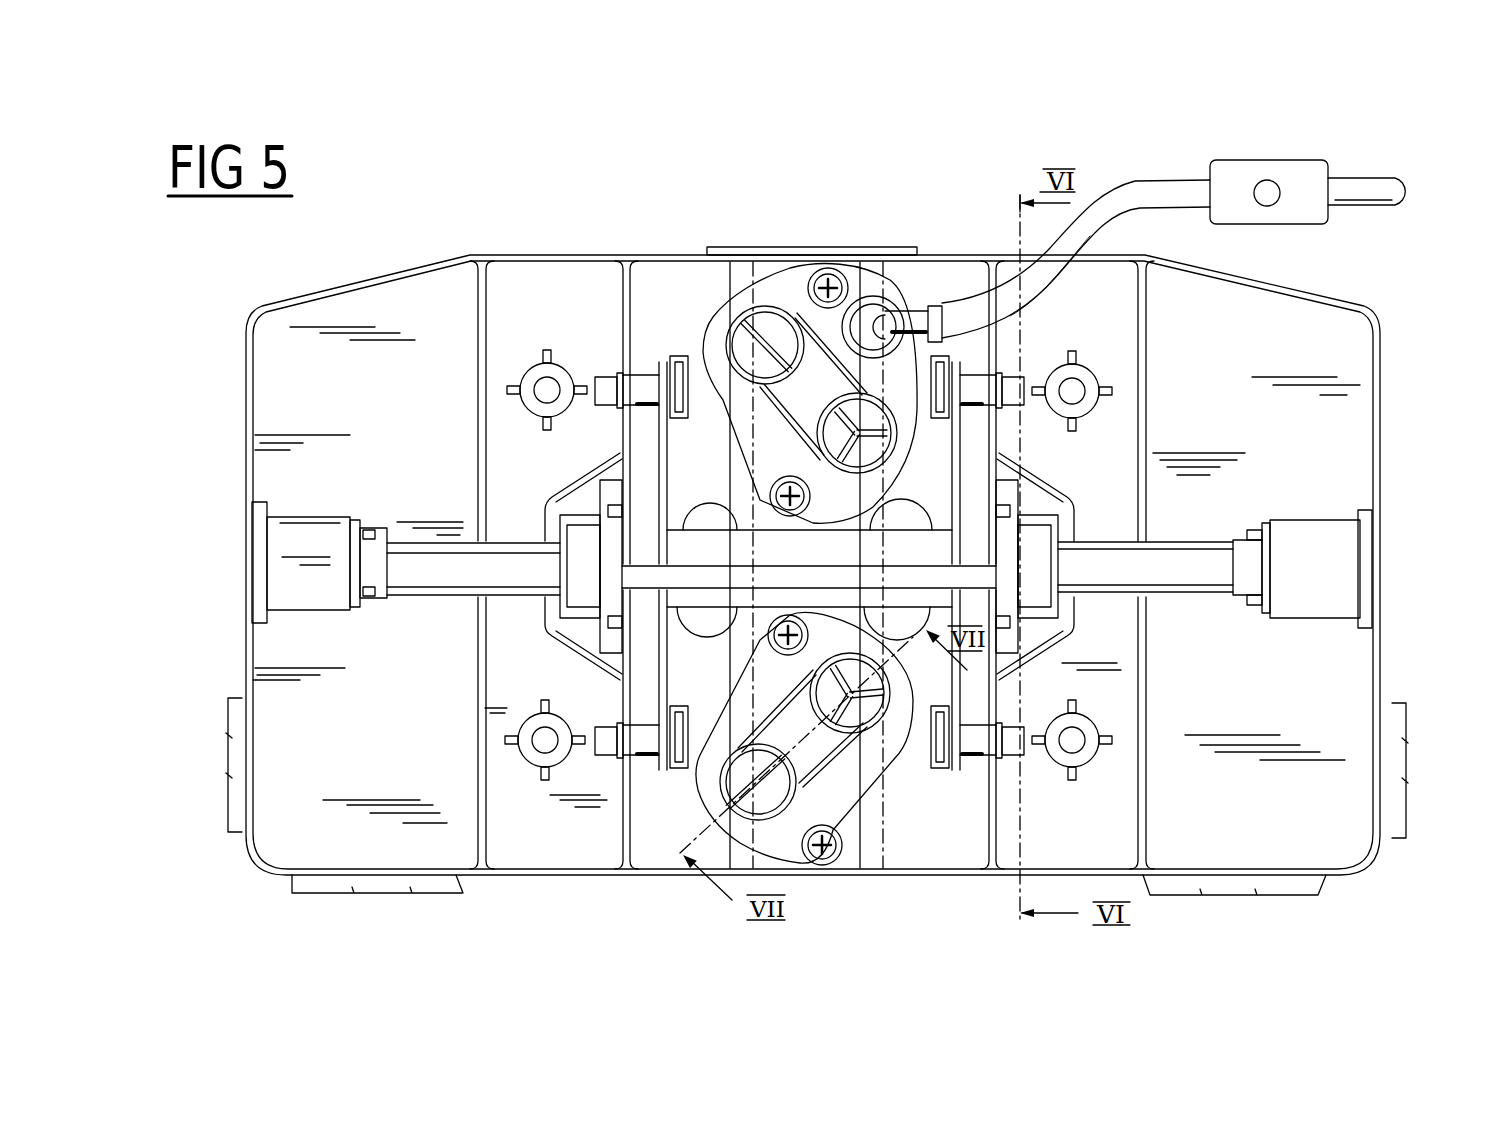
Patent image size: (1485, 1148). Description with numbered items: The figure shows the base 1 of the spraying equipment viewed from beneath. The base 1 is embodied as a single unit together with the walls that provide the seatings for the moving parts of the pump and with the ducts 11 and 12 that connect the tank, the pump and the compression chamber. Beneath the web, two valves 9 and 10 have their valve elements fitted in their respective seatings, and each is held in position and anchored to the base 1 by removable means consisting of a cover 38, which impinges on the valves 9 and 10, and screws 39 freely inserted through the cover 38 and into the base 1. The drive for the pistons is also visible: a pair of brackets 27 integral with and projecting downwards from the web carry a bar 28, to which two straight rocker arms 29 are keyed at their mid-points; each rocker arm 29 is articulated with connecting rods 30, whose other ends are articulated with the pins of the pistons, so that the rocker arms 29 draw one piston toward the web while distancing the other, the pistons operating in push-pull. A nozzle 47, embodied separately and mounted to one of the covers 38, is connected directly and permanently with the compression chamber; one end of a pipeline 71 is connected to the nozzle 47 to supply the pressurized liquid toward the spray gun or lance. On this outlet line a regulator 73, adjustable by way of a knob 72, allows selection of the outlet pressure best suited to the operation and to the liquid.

The base 1 is at (318, 284).
The valve 9 is at (683, 390).
The valve 10 is at (890, 730).
The duct 11 is at (732, 473).
The duct 12 is at (948, 300).
The bracket 27 is at (1153, 397).
The bar 28 is at (1208, 594).
The rocker arm 29 is at (637, 693).
The connecting rod 30 is at (613, 372).
The cover 38 is at (730, 337).
The screw 39 is at (812, 272).
The nozzle 47 is at (883, 300).
The pipeline 71 is at (1139, 200).
The knob 72 is at (1272, 198).
The regulator 73 is at (1313, 163).